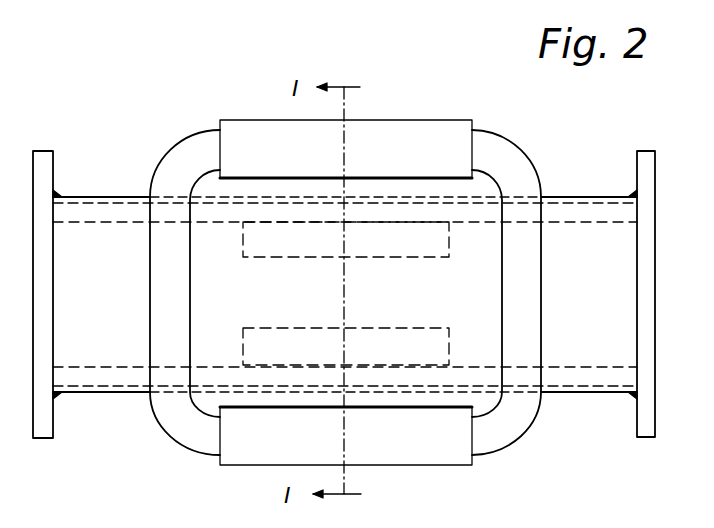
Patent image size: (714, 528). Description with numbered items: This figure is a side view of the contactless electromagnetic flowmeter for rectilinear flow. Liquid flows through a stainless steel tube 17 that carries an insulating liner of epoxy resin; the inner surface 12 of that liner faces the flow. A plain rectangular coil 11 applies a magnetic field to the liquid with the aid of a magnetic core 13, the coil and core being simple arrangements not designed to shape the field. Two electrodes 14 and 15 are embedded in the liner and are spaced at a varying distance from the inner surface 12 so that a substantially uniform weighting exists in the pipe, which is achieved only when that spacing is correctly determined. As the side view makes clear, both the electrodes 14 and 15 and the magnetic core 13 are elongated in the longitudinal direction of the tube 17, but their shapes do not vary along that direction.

The rectangular coil 11 is at (516, 152).
The inner surface of the liner 12 is at (591, 220).
The magnetic core 13 is at (420, 130).
The electrode 14 is at (413, 248).
The electrode 15 is at (290, 333).
The stainless steel tube 17 is at (100, 195).